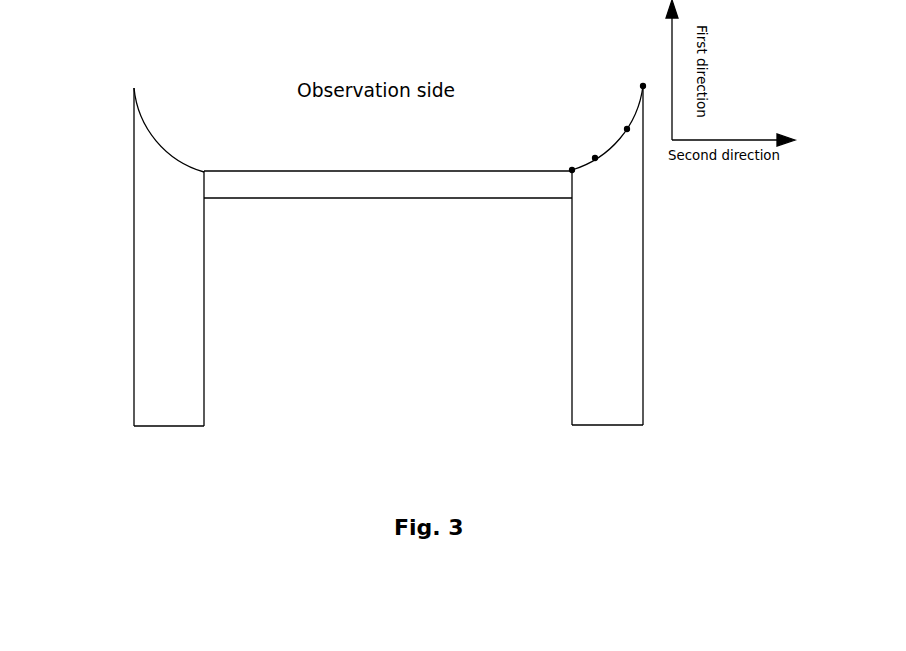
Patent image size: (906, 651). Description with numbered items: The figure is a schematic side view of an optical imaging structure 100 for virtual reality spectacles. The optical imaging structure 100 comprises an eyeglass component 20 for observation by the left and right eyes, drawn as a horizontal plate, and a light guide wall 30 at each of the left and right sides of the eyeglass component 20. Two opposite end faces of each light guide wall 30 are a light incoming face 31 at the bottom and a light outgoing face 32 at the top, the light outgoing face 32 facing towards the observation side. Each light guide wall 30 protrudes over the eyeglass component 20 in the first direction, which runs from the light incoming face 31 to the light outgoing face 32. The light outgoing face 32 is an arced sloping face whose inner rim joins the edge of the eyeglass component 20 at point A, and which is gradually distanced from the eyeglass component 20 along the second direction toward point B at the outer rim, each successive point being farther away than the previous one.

The optical imaging structure 100 is at (130, 28).
The eyeglass component 20 is at (359, 190).
The light guide wall 30 is at (416, 244).
The light incoming face 31 is at (167, 426).
The light outgoing face 32 is at (182, 162).